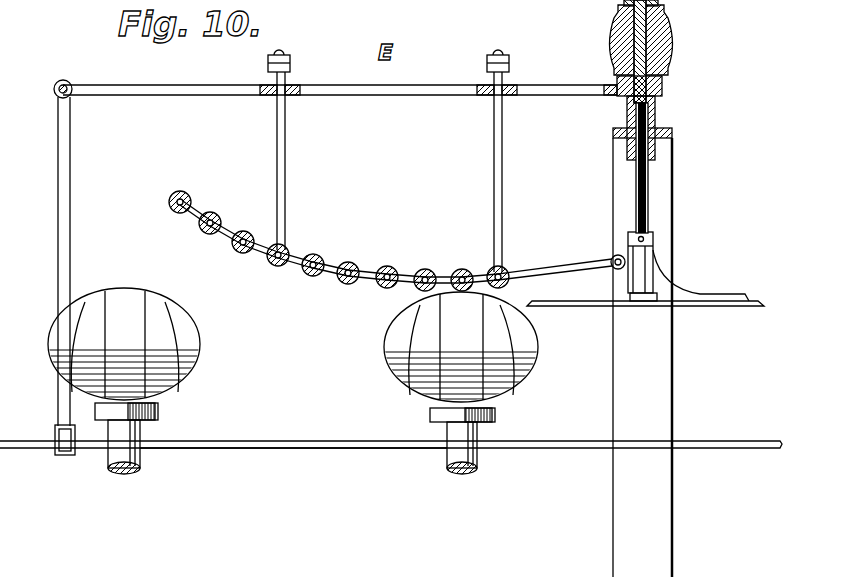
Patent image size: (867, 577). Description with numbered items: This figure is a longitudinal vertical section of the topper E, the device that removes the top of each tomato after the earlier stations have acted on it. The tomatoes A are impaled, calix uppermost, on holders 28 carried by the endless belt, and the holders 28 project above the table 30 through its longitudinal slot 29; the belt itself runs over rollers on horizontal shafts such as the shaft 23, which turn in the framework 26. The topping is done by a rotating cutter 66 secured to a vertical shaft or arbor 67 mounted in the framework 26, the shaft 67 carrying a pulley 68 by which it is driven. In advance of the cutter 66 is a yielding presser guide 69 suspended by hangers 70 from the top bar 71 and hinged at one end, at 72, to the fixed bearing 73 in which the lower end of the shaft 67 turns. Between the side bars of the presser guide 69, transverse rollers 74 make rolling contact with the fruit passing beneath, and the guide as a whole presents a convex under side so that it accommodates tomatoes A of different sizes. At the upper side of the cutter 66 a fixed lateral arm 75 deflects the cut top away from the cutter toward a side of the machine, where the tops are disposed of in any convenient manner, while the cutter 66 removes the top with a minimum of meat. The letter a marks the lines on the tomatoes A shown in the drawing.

The top bar 71 is at (388, 95).
The hangers 70 is at (292, 195).
The transverse rollers 74 is at (393, 270).
The yielding presser guide 69 is at (527, 272).
The hinge 72 is at (612, 258).
The fixed bearing 73 is at (651, 264).
The fixed lateral arm 75 is at (688, 293).
The rotating cutter 66 is at (606, 306).
The pulley 68 is at (677, 57).
The vertical shaft 67 is at (636, 203).
The framework 26 is at (650, 535).
The tomatoes A is at (200, 347).
The bulb ribs a is at (145, 315).
The holders 28 is at (120, 468).
The longitudinal slot 29 is at (243, 441).
The table 30 is at (310, 449).
The horizontal shaft 23 is at (396, 575).